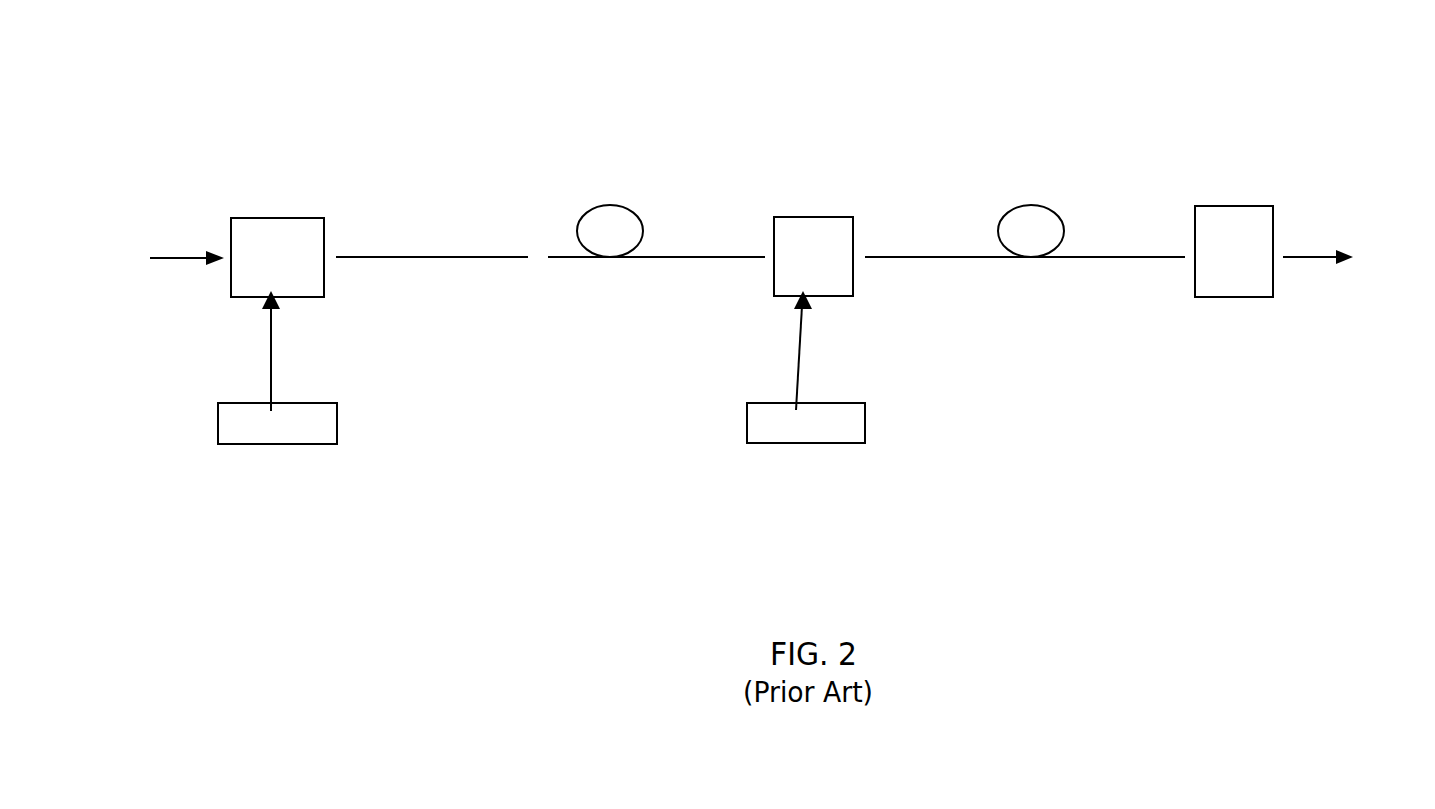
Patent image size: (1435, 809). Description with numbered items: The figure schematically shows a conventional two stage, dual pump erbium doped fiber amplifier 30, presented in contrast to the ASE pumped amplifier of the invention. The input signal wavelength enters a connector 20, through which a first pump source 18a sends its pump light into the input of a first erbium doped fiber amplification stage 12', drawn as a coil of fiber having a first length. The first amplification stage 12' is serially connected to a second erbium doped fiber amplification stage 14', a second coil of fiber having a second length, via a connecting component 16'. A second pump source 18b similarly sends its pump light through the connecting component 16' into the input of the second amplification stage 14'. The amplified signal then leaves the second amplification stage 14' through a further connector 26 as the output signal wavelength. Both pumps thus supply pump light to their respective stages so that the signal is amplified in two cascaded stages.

The two stage/dual pump erbium doped fiber amplifier 30 is at (771, 156).
The connector 20 is at (277, 227).
The first erbium doped fiber amplification stage 12' is at (616, 213).
The connecting component 16' is at (809, 213).
The second erbium doped fiber amplification stage 14' is at (1043, 213).
The output connector 26 is at (1228, 215).
The first pump source 18a is at (290, 388).
The second pump source 18b is at (812, 381).